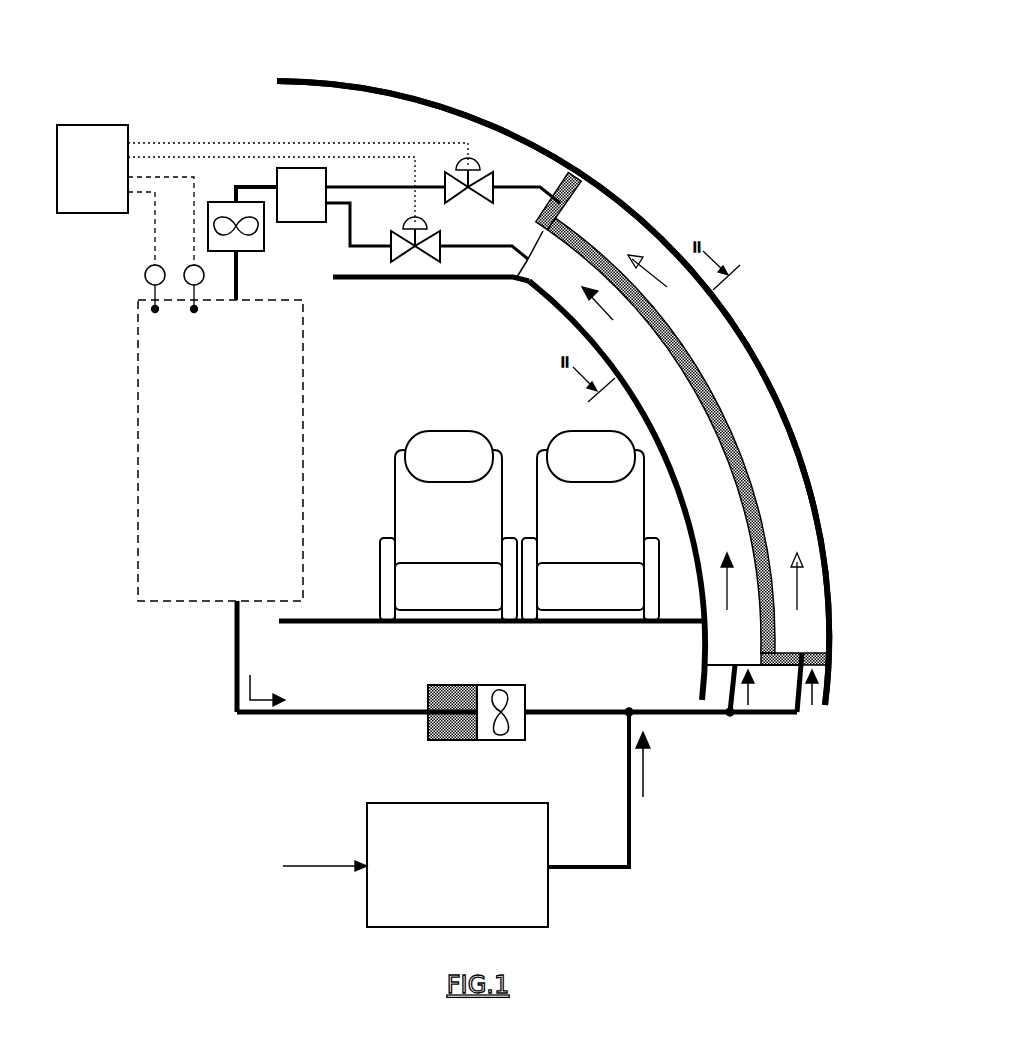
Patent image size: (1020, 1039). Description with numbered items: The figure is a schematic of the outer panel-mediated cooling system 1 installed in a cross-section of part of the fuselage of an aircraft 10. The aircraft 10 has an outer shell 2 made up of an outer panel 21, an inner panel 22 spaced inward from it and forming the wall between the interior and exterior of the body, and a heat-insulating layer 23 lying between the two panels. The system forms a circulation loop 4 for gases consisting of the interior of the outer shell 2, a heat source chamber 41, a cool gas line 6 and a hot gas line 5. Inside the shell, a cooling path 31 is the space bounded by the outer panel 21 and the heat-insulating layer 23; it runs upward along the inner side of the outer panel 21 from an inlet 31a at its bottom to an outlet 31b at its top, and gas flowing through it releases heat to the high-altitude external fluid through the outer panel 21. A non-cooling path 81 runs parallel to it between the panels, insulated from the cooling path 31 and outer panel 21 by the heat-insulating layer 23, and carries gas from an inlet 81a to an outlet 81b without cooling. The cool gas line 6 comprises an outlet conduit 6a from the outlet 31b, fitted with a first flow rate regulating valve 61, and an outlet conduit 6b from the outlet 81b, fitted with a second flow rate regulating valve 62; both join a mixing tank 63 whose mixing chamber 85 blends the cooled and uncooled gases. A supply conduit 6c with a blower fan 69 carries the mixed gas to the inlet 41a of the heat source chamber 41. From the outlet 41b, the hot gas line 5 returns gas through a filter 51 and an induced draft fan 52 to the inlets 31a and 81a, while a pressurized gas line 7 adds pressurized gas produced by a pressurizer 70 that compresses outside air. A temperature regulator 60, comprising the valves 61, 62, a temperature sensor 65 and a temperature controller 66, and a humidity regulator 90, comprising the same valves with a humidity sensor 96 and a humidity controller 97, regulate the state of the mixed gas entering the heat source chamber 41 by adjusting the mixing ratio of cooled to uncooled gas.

The outer panel-mediated cooling system 1 is at (746, 158).
The outer shell 2 is at (400, 92).
The circulation loop 4 is at (180, 506).
The hot gas line 5 is at (517, 716).
The cool gas line 6 is at (393, 206).
The outlet conduit 6a is at (537, 185).
The outlet conduit 6b is at (466, 279).
The supply conduit 6c is at (239, 186).
The pressurized gas line 7 is at (640, 855).
The aircraft 10 is at (459, 88).
The outer panel 21 is at (517, 132).
The inner panel 22 is at (688, 533).
The heat-insulating layer 23 is at (696, 363).
The cooling path 31 is at (715, 432).
The inlet 31a is at (803, 655).
The outlet 31b is at (590, 210).
The heat source chamber 41 is at (220, 450).
The inlet 41a is at (236, 301).
The outlet 41b is at (238, 600).
The filter 51 is at (440, 685).
The induced draft fan 52 is at (500, 685).
The temperature regulator 60 is at (262, 153).
The first flow rate regulating valve 61 is at (470, 170).
The second flow rate regulating valve 62 is at (394, 262).
The mixing tank 63 is at (296, 167).
The temperature sensor 65 is at (194, 264).
The temperature controller 66 is at (92, 147).
The blower fan 69 is at (266, 242).
The pressurizer 70 is at (341, 865).
The non-cooling path 81 is at (657, 448).
The inlet 81a is at (710, 665).
The outlet 81b is at (526, 289).
The mixing chamber 85 is at (300, 197).
The humidity regulator 90 is at (129, 265).
The humidity sensor 96 is at (146, 270).
The humidity controller 97 is at (92, 188).